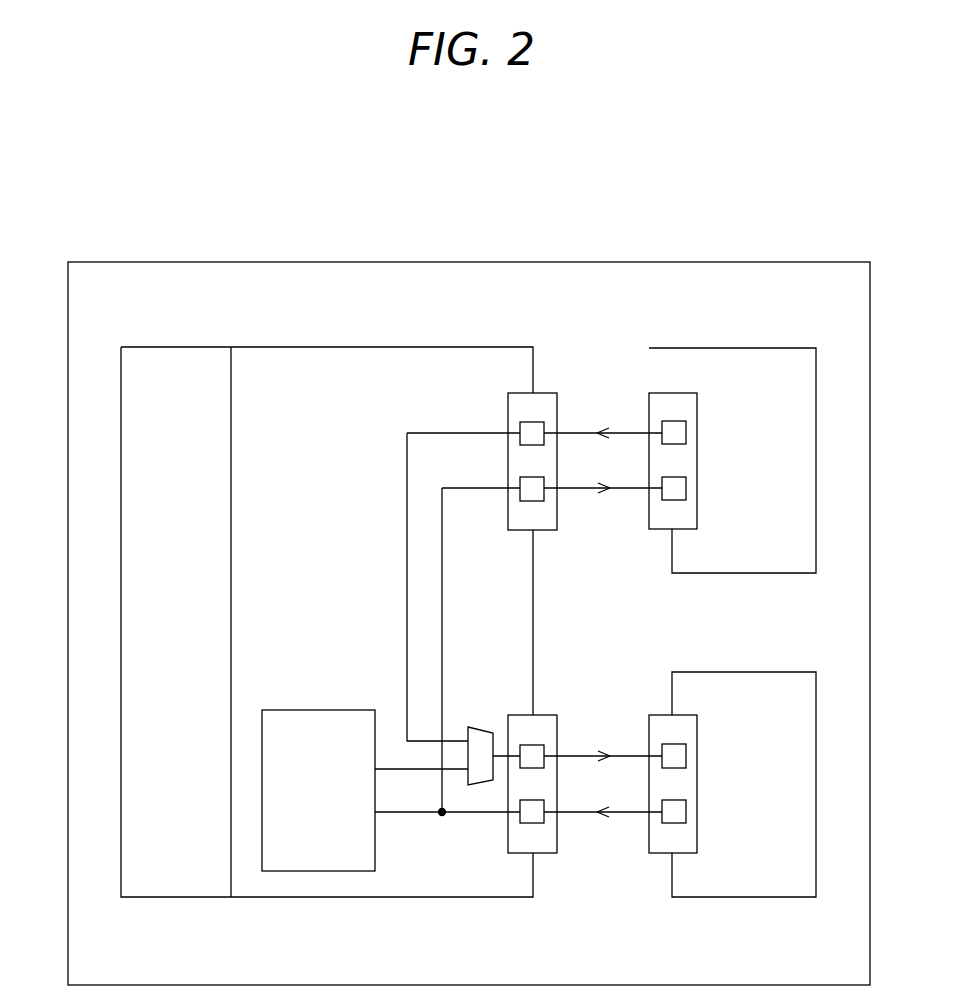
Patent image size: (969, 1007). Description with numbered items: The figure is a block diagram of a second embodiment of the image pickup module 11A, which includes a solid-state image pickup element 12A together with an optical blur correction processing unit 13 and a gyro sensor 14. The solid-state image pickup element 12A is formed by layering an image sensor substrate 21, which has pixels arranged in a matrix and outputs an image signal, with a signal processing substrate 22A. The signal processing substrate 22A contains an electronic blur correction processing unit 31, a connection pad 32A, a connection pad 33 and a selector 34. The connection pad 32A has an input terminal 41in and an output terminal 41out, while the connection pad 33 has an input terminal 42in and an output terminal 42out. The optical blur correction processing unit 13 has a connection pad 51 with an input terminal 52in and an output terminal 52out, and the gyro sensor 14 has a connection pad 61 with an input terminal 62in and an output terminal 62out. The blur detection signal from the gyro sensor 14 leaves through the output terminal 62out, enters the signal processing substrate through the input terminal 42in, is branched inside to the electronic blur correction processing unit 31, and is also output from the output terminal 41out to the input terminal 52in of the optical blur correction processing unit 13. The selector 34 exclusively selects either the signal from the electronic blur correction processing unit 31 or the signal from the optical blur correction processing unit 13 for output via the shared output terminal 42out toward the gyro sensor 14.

The image pickup module 11A is at (443, 262).
The solid-state image pickup element 12A is at (336, 347).
The optical blur correction processing unit 13 is at (745, 348).
The gyro sensor 14 is at (743, 898).
The image sensor substrate 21 is at (175, 898).
The signal processing substrate 22A is at (343, 898).
The electronic blur correction processing unit 31 is at (318, 710).
The connection pad 32A is at (545, 393).
The connection pad 33 is at (547, 855).
The selector 34 is at (480, 727).
The input terminal 41in is at (528, 422).
The output terminal 41out is at (532, 502).
The input terminal 42in is at (530, 823).
The output terminal 42out is at (533, 745).
The connection pad 51 is at (665, 393).
The output terminal 52out is at (675, 424).
The input terminal 52in is at (675, 480).
The connection pad 61 is at (662, 855).
The input terminal 62in is at (675, 745).
The output terminal 62out is at (675, 801).